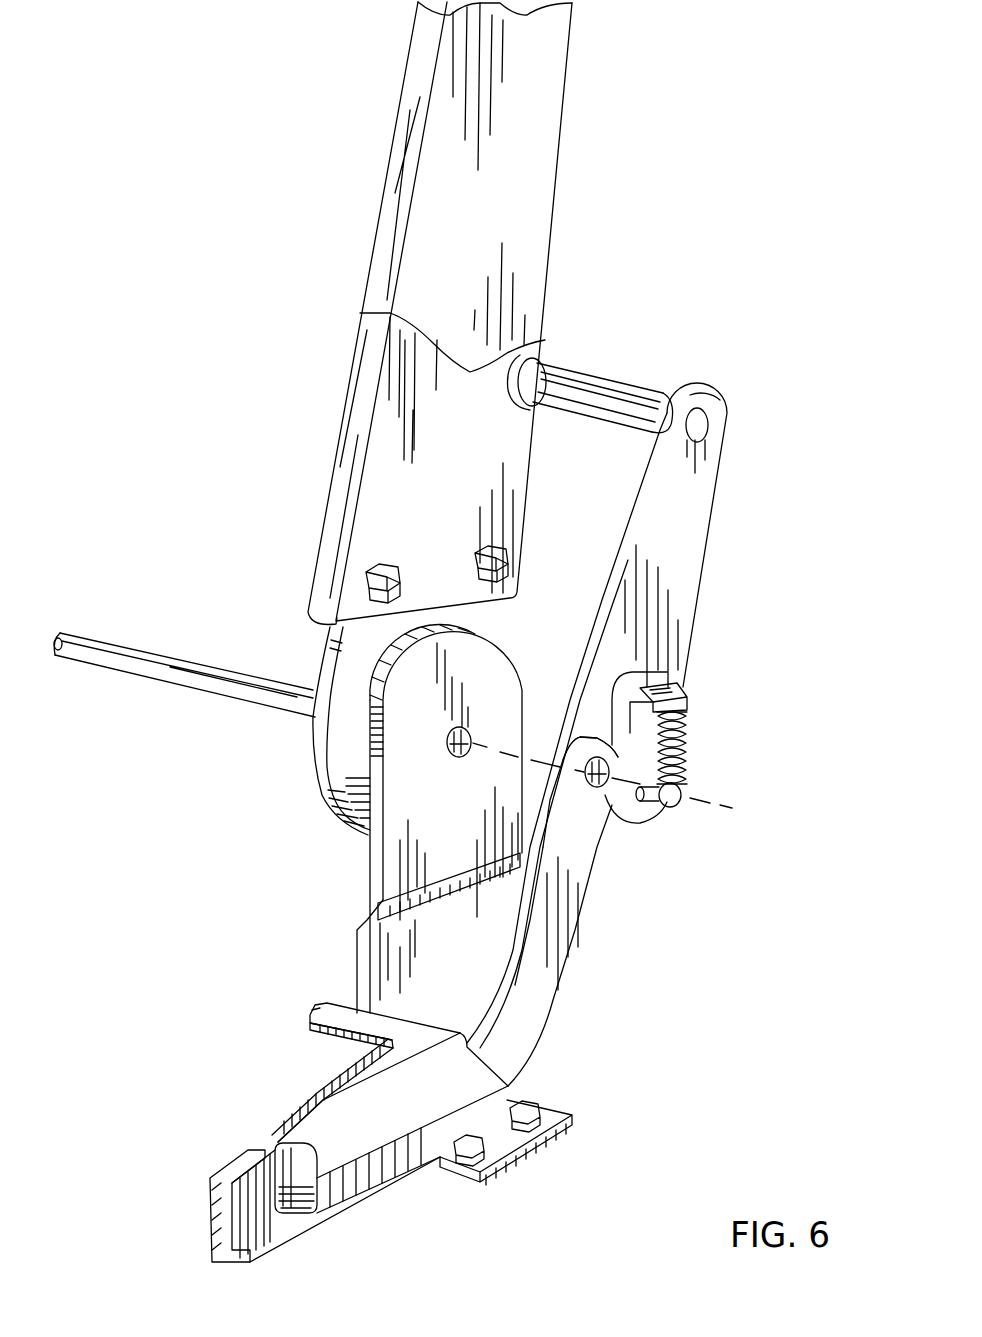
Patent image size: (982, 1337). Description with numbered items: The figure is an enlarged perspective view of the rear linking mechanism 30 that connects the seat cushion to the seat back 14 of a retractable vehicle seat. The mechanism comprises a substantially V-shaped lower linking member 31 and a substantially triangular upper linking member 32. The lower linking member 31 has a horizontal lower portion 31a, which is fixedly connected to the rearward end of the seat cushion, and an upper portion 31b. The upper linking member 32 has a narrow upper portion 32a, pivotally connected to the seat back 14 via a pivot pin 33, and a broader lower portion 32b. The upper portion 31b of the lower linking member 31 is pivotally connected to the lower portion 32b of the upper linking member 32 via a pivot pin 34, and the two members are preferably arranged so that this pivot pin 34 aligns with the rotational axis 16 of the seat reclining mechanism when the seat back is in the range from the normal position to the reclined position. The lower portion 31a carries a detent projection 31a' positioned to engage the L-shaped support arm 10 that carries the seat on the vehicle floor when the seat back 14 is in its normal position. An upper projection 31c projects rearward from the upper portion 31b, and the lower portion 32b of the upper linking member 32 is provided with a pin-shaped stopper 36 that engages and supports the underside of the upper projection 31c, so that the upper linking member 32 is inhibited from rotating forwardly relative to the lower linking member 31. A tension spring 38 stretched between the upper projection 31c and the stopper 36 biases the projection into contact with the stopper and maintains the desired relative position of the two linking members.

The support arm 10 is at (358, 952).
The seat back 14 is at (563, 166).
The rotational axis 16 is at (445, 746).
The rear linking mechanism 30 is at (722, 492).
The lower linking member 31 is at (503, 957).
The lower portion 31a is at (359, 1149).
The detent projection 31a' is at (330, 1072).
The upper portion 31b is at (573, 850).
The upper projection 31c is at (650, 672).
The upper linking member 32 is at (640, 715).
The upper portion 32a is at (707, 467).
The lower portion 32b is at (597, 710).
The pivot pin 33 is at (600, 392).
The pivot pin 34 is at (593, 787).
The stopper 36 is at (679, 788).
The tension spring 38 is at (687, 727).